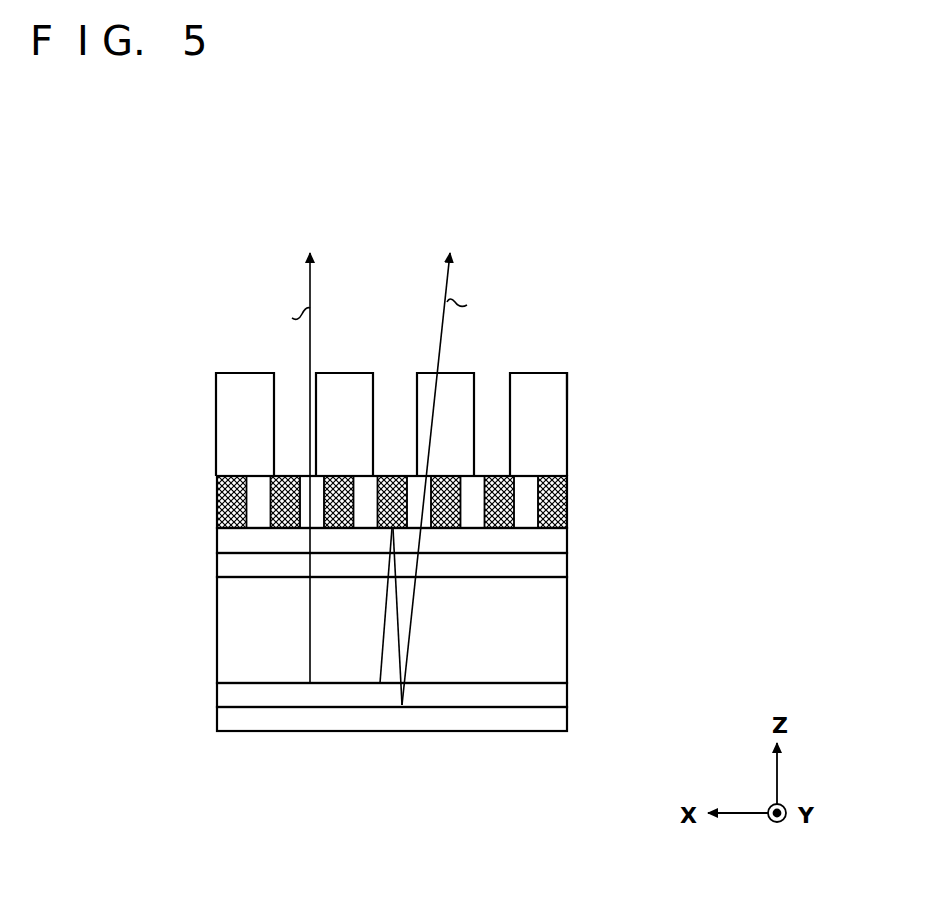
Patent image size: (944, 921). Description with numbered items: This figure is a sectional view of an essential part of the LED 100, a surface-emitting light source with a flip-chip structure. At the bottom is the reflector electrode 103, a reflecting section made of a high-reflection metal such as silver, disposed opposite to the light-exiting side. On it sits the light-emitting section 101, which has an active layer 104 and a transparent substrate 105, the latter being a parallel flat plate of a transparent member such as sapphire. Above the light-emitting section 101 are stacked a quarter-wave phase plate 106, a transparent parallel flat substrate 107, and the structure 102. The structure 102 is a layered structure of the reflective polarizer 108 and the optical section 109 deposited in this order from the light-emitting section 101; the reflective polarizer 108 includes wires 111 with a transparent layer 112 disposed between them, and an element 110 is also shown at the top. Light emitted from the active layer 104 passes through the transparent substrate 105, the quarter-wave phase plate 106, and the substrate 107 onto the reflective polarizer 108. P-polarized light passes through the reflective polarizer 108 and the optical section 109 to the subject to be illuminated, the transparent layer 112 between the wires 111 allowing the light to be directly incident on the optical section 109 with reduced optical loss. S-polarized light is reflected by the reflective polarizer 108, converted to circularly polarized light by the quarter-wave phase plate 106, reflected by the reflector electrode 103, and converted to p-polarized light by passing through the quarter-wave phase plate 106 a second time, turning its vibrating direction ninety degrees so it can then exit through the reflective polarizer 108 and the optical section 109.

The LED 100 is at (570, 212).
The light-emitting section 101 is at (620, 627).
The structure 102 is at (670, 440).
The reflector electrode 103 is at (567, 728).
The active layer 104 is at (567, 694).
The transparent substrate 105 is at (567, 650).
The λ/4-phase plate 106 is at (567, 572).
The substrate 107 is at (567, 540).
The reflective polarizer 108 is at (567, 498).
The optical section 109 is at (590, 418).
The top surface of pillar 110 is at (550, 375).
The wires 111 is at (222, 492).
The transparent layer 112 is at (258, 522).